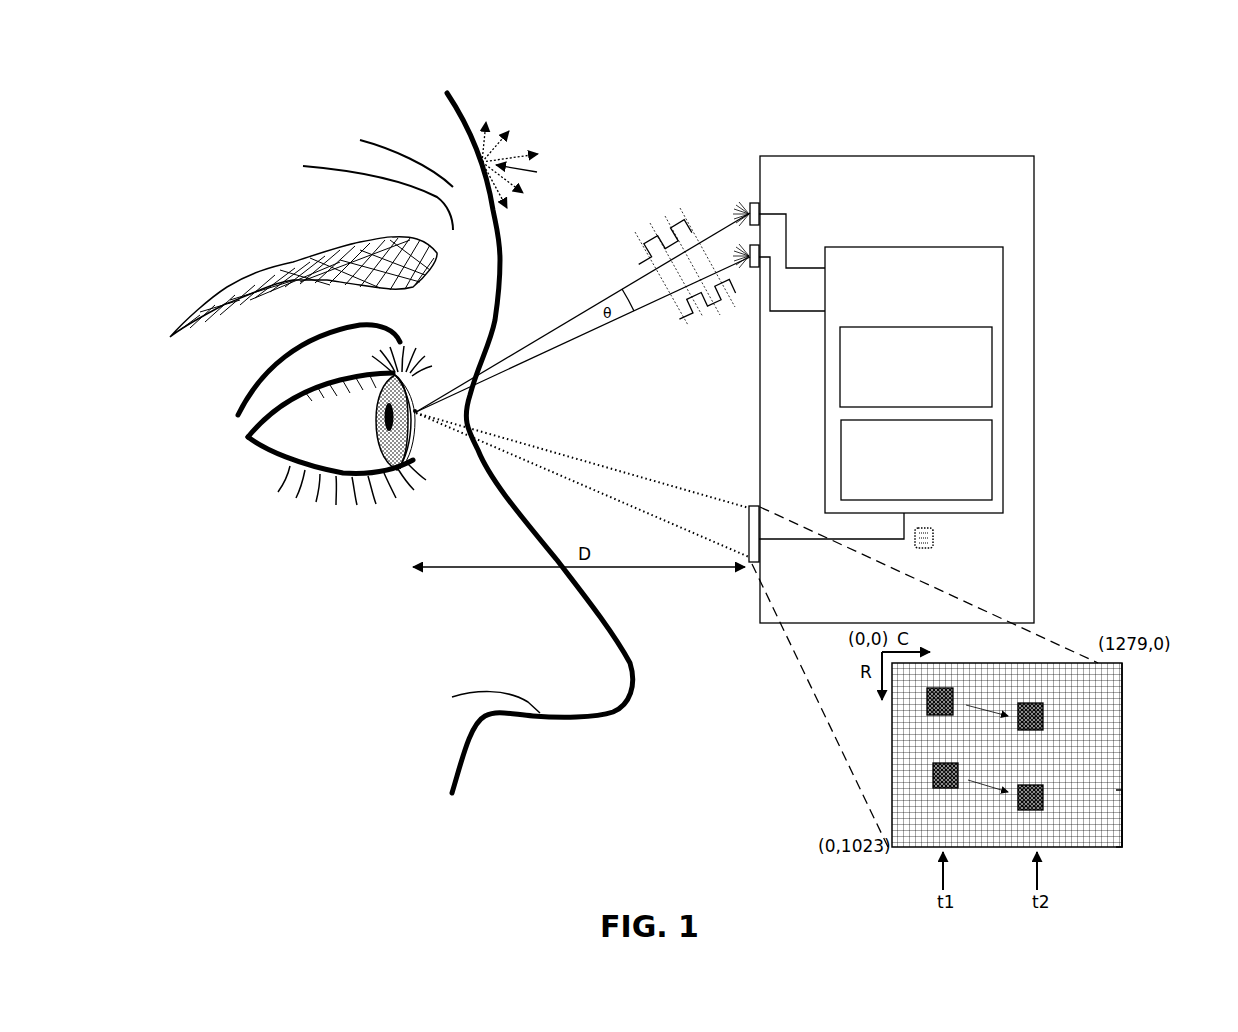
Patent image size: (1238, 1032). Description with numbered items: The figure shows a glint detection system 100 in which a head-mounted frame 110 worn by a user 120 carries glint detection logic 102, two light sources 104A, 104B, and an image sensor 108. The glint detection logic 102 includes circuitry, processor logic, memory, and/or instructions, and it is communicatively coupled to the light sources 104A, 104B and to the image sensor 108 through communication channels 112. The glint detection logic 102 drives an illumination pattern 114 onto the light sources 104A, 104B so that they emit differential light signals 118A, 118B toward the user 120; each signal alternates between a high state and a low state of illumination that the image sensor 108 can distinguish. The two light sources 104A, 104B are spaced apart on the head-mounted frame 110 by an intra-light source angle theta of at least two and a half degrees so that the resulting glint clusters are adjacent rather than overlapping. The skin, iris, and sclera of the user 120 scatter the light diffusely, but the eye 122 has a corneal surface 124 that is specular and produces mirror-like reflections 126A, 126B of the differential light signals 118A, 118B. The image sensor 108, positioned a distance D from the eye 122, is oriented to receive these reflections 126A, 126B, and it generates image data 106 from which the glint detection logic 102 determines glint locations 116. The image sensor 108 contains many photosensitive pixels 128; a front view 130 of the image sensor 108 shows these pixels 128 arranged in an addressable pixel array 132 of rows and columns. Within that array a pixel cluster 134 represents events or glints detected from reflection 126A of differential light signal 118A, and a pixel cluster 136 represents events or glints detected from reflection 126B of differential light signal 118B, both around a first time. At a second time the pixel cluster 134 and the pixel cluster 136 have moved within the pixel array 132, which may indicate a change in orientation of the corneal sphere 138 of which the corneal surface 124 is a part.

The glint detection system 100 is at (660, 35).
The user 120 is at (304, 86).
The eye 122 is at (349, 447).
The corneal surface 124 is at (422, 444).
The corneal sphere 138 is at (416, 408).
The light source 104A is at (752, 203).
The light source 104B is at (752, 268).
The differential light signal 118A is at (676, 210).
The differential light signal 118B is at (700, 325).
The head-mounted frame 110 is at (926, 207).
The glint detection logic 102 is at (958, 322).
The illumination pattern 114 is at (929, 402).
The glint locations 116 is at (930, 492).
The communication channels 112 is at (787, 228).
The image sensor 108 is at (762, 548).
The image data 106 is at (935, 536).
The reflection 126A is at (641, 476).
The reflection 126B is at (650, 510).
The pixels 128 is at (1122, 672).
The front view 130 is at (1148, 727).
The pixel array 132 is at (1122, 793).
The pixel cluster 134 is at (1037, 693).
The pixel cluster 136 is at (961, 802).